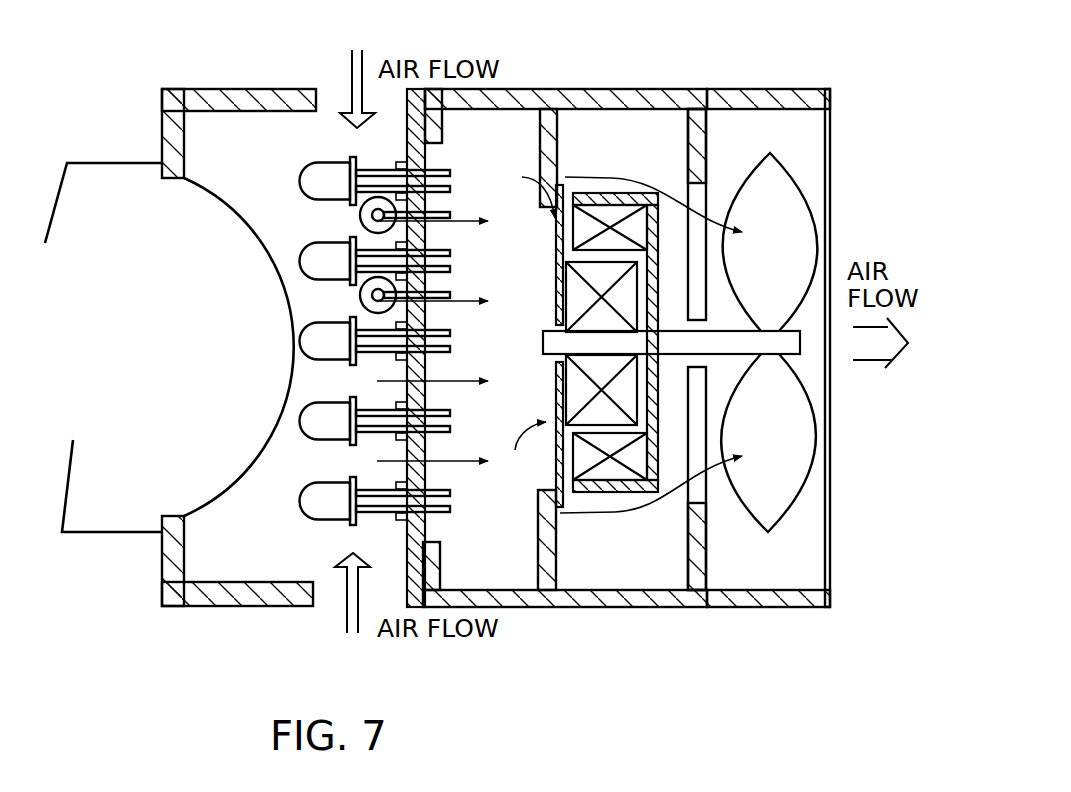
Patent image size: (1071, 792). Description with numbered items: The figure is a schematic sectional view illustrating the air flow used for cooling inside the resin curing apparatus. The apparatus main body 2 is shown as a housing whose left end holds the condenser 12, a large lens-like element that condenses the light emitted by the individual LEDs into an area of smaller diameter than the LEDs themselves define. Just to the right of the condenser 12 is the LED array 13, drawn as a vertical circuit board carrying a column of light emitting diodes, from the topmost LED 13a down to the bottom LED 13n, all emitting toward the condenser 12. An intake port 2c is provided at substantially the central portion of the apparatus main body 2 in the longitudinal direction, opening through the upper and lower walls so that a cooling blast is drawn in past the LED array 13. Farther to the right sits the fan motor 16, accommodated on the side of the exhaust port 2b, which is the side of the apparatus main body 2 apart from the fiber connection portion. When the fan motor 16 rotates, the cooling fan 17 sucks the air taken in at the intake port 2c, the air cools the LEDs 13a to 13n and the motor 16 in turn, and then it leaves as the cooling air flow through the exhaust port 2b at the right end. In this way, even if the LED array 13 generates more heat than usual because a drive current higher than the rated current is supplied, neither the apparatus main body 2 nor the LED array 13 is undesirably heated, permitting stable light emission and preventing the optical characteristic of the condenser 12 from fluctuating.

The apparatus main body 2 is at (571, 97).
The exhaust port 2b is at (767, 90).
The intake port 2c is at (330, 607).
The condenser 12 is at (110, 527).
The LED array 13 is at (408, 135).
The LED 13a is at (302, 184).
The LED 13n is at (302, 500).
The fan motor 16 is at (634, 526).
The cooling fan 17 is at (762, 513).